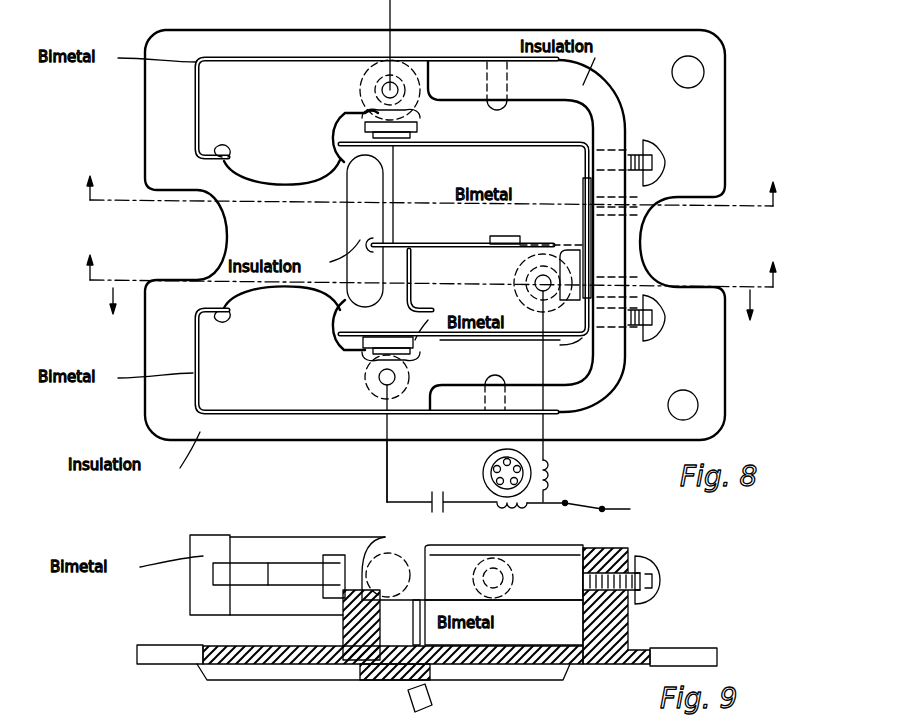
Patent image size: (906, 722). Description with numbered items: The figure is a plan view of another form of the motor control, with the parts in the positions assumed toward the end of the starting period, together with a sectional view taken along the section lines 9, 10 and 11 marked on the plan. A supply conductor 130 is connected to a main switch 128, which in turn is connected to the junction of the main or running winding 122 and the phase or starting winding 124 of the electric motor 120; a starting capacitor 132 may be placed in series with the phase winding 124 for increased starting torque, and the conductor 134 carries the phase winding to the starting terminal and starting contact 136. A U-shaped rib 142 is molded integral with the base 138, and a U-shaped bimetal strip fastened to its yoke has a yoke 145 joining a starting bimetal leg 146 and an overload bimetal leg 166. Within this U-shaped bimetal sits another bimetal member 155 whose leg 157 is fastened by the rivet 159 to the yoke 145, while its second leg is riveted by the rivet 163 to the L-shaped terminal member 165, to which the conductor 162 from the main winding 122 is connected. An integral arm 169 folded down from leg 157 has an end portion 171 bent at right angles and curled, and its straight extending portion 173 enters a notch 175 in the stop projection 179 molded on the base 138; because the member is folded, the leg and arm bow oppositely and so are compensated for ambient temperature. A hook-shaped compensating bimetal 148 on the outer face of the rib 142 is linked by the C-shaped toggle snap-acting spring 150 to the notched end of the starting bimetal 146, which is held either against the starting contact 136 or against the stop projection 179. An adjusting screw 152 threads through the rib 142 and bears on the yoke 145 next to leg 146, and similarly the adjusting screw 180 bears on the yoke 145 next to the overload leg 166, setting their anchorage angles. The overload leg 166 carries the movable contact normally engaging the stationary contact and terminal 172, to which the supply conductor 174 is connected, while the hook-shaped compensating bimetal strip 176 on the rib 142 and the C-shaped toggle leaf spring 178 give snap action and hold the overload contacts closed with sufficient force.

In FIG. 8, the section line 9- 9 is at (431, 178).
In FIG. 8, the section line 10- 10 is at (434, 259).
In FIG. 8, the section line 11- 11 is at (438, 316).
In FIG. 8, the electric motor 120 is at (485, 480).
In FIG. 8, the main winding 122 is at (548, 472).
In FIG. 8, the phase winding 124 is at (508, 512).
In FIG. 8, the main switch 128 is at (582, 502).
In FIG. 8, the supply conductor 130 is at (627, 505).
In FIG. 8, the starting capacitor 132 is at (428, 503).
In FIG. 8, the conductor 134 is at (387, 470).
In FIG. 8, the starting contact 136 is at (363, 376).
In FIG. 8, the base 138 is at (712, 375).
In FIG. 9, the base 138 is at (142, 660).
In FIG. 8, the U-shaped rib 142 is at (603, 388).
In FIG. 9, the U-shaped rib 142 is at (625, 620).
In FIG. 8, the yoke 145 is at (600, 262).
In FIG. 8, the starting bimetal leg 146 is at (470, 335).
In FIG. 8, the compensating bimetal 148 is at (263, 412).
In FIG. 8, the toggle snap-acting spring 150 is at (267, 298).
In FIG. 8, the adjusting screw 152 is at (650, 328).
In FIG. 8, the bimetal member 155 is at (443, 247).
In FIG. 8, the leg 157 is at (590, 240).
In FIG. 9, the leg 157 is at (583, 562).
In FIG. 8, the rivet 159 is at (585, 197).
In FIG. 9, the rivet 159 is at (578, 597).
In FIG. 8, the conductor 162 is at (545, 365).
In FIG. 8, the rivet 163 is at (572, 245).
In FIG. 8, the L-shaped terminal member 165 is at (512, 299).
In FIG. 8, the overload bimetal leg 166 is at (493, 180).
In FIG. 9, the overload bimetal leg 166 is at (335, 560).
In FIG. 8, the integral arm 169 is at (487, 244).
In FIG. 8, the end portion 171 is at (414, 265).
In FIG. 8, the stationary contact and terminal 172 is at (357, 123).
In FIG. 9, the stationary contact and terminal 172 is at (402, 560).
In FIG. 8, the straight extending portion 173 is at (391, 240).
In FIG. 8, the supply conductor 174 is at (395, 22).
In FIG. 9, the supply conductor 174 is at (413, 688).
In FIG. 8, the notch 175 is at (362, 244).
In FIG. 8, the compensating bimetal strip 176 is at (228, 60).
In FIG. 9, the compensating bimetal strip 176 is at (203, 597).
In FIG. 8, the toggle leaf spring 178 is at (255, 180).
In FIG. 9, the toggle leaf spring 178 is at (268, 567).
In FIG. 8, the stop projection 179 is at (352, 190).
In FIG. 9, the stop projection 179 is at (343, 636).
In FIG. 8, the adjusting screw 180 is at (655, 152).
In FIG. 9, the adjusting screw 180 is at (652, 572).